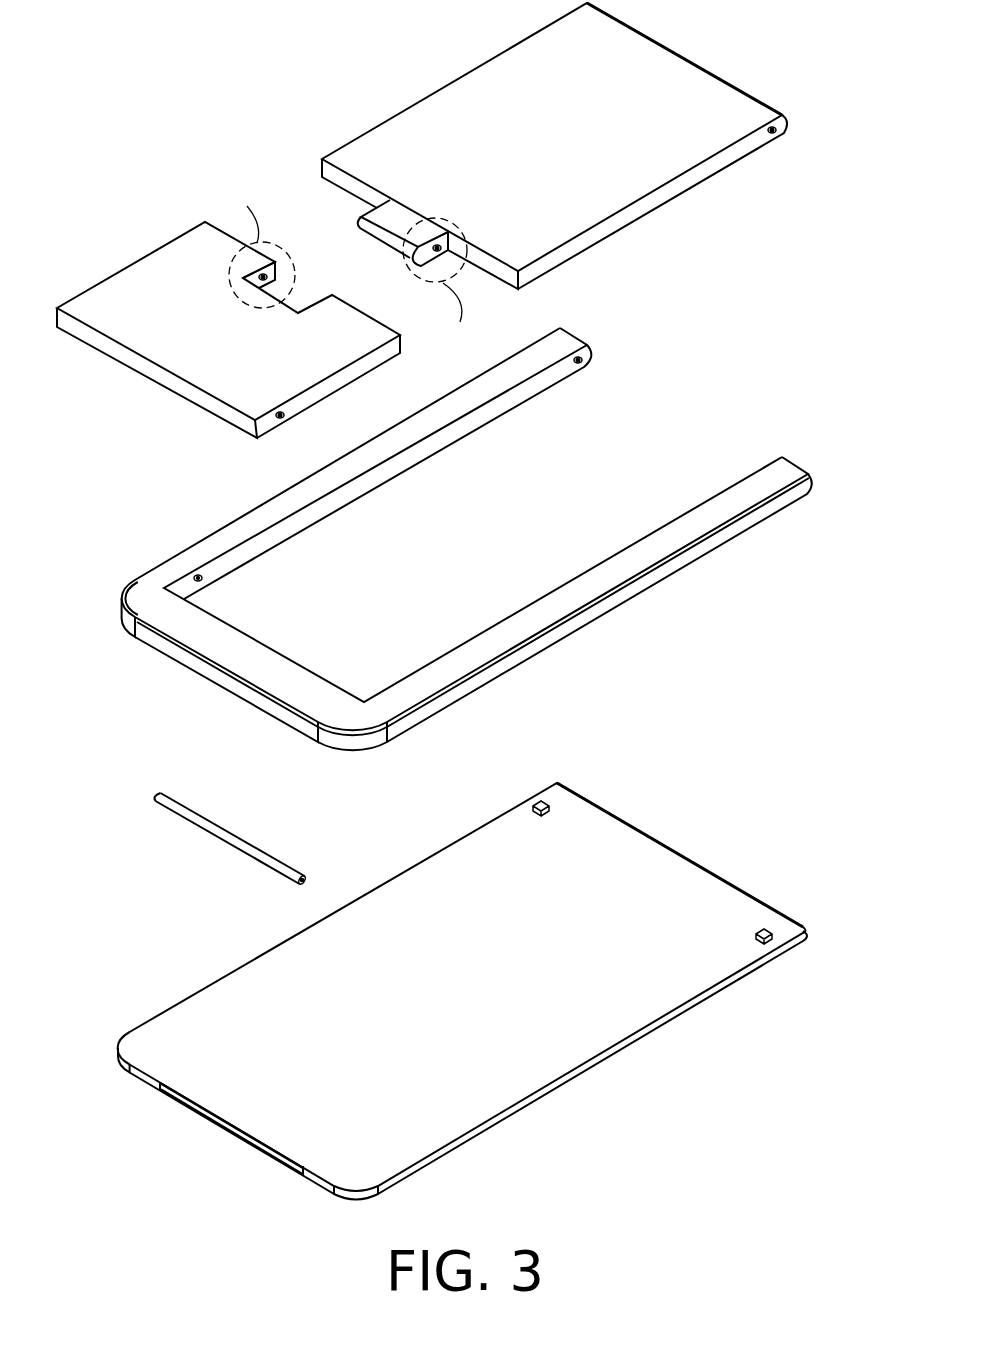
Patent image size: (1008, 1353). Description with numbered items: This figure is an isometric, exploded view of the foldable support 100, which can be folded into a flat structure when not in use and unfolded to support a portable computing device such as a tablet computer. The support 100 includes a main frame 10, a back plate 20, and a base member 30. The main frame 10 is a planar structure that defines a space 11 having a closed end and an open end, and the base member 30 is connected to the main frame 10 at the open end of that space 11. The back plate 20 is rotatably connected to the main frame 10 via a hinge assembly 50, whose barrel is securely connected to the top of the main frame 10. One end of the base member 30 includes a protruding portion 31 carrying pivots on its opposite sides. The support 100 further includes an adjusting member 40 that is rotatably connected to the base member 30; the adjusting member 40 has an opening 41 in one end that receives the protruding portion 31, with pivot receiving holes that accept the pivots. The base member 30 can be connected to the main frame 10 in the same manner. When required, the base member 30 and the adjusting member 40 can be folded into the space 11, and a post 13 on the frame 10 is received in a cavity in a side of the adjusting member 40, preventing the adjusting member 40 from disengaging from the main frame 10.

The foldable support 100 is at (215, 97).
The main frame 10 is at (232, 640).
The space 11 is at (337, 555).
The post 13 is at (197, 571).
The back plate 20 is at (553, 1052).
The base member 30 is at (735, 104).
The protruding portion 31 is at (393, 220).
The adjusting member 40 is at (152, 278).
The opening 41 is at (302, 297).
The hinge assembly 50 is at (222, 833).